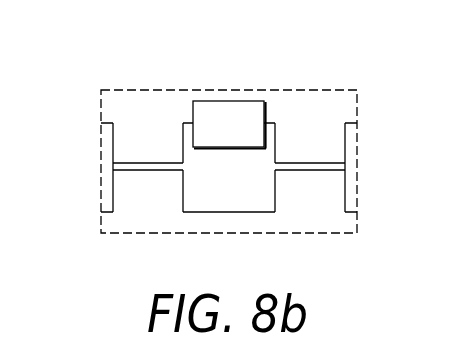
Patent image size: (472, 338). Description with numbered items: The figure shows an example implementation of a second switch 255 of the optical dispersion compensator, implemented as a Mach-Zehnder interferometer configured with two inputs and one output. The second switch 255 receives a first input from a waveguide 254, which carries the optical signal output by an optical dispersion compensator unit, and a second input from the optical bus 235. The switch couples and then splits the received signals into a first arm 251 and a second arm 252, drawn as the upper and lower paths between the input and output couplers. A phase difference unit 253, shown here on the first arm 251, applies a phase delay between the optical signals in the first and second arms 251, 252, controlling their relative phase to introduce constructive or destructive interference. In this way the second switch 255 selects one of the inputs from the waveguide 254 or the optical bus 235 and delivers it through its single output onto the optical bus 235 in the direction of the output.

The second switch 255 is at (125, 70).
The waveguide 254 is at (101, 123).
The optical bus 235 is at (101, 212).
The first arm 251 is at (269, 123).
The second arm 252 is at (227, 212).
The phase difference unit 253 is at (227, 100).